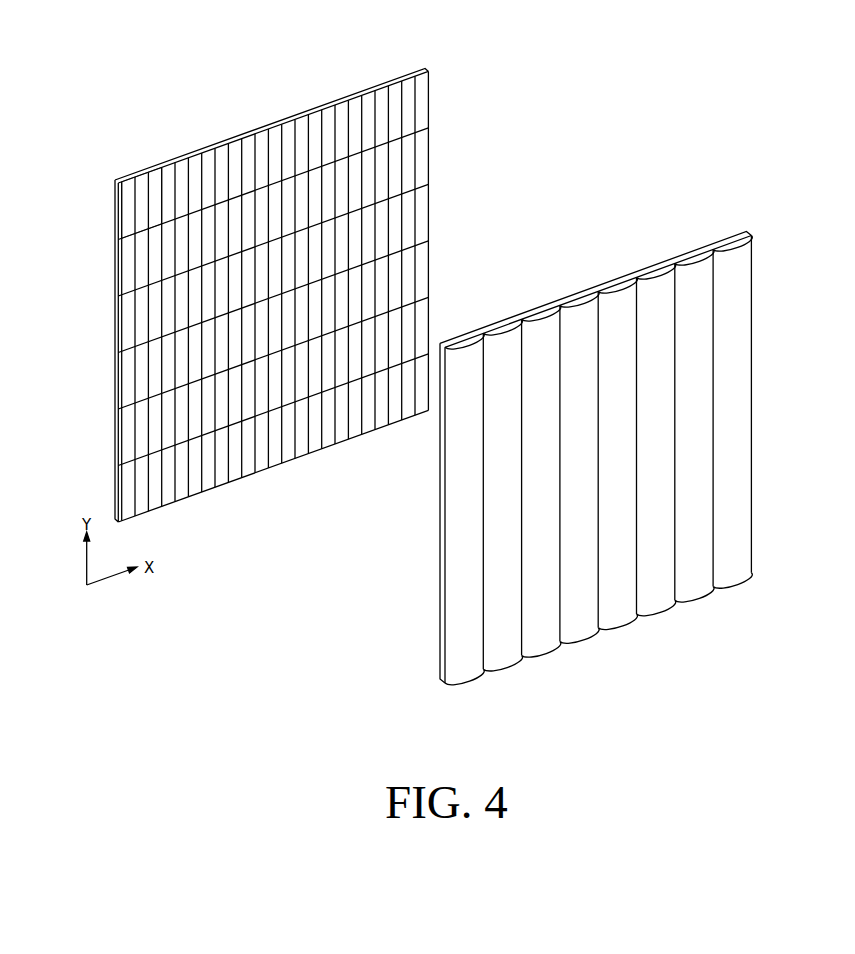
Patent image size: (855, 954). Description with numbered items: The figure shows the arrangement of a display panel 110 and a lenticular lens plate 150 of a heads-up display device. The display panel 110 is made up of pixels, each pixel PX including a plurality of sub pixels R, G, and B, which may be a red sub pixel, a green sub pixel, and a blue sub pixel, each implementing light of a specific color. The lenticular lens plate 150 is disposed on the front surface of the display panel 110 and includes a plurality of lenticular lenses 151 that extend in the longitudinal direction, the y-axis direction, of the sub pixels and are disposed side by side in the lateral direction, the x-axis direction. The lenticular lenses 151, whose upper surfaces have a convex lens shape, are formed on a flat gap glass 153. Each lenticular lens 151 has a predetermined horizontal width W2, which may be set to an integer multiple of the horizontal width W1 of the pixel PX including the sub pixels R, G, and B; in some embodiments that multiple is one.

The display panel 110 is at (432, 67).
The pixel PX is at (117, 202).
The horizontal width of the pixel W1 is at (122, 228).
The horizontal width of the lenticular lens W2 is at (522, 312).
The lenticular lens plate 150 is at (596, 420).
The lenticular lens 151 is at (693, 256).
The flat gap glass 153 is at (728, 241).